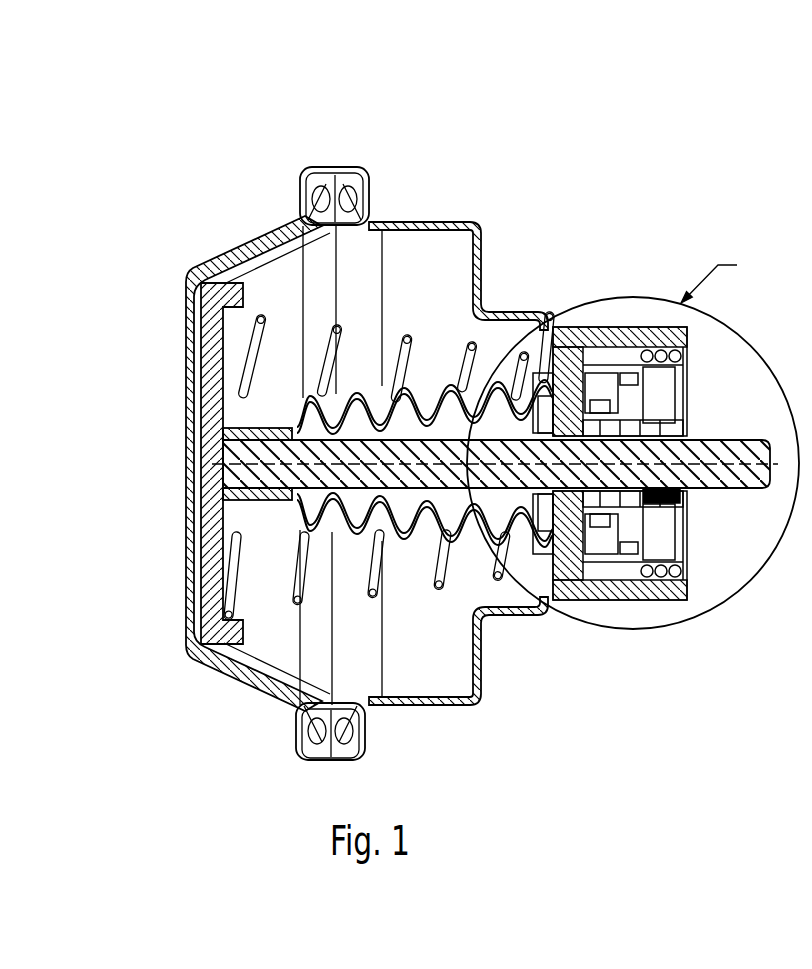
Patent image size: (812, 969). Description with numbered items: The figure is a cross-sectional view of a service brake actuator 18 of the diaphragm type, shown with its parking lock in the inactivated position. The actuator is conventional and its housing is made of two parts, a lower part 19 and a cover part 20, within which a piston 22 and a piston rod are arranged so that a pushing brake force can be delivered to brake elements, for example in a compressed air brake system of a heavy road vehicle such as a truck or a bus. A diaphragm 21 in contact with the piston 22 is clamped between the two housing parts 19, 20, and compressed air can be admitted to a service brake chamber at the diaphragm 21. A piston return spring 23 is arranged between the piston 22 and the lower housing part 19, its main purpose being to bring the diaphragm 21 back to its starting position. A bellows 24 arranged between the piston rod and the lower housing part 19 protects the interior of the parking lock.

The service brake actuator 18 is at (338, 120).
The lower part 19 is at (478, 225).
The cover part 20 is at (244, 244).
The diaphragm 21 is at (352, 212).
The piston 22 is at (184, 457).
The piston return spring 23 is at (298, 588).
The bellows 24 is at (410, 532).